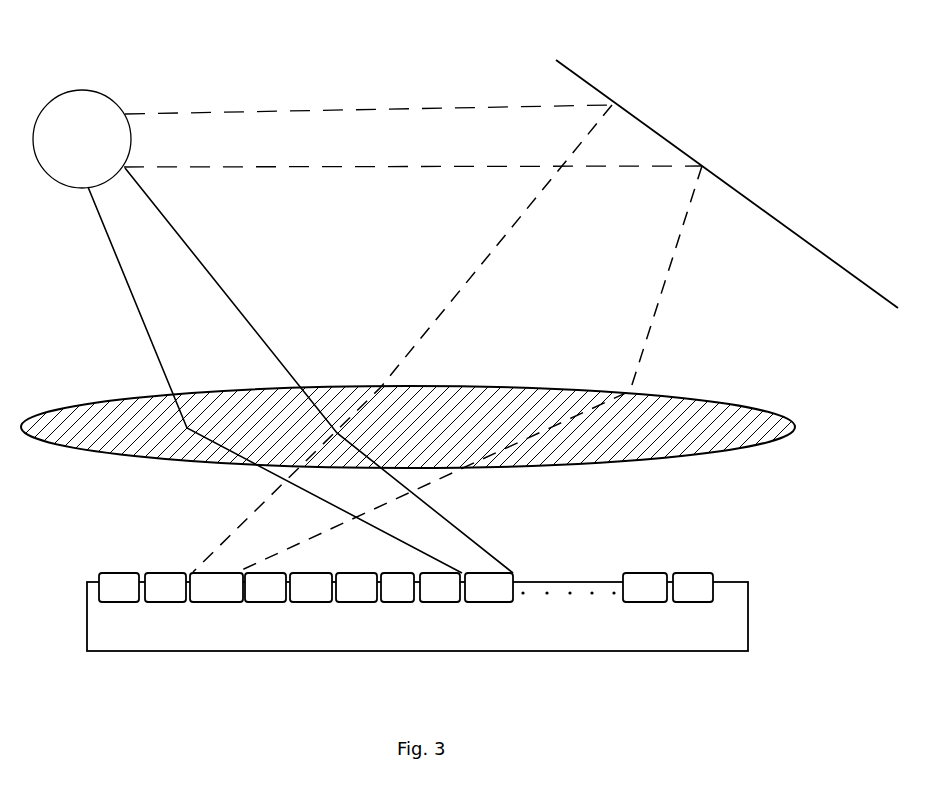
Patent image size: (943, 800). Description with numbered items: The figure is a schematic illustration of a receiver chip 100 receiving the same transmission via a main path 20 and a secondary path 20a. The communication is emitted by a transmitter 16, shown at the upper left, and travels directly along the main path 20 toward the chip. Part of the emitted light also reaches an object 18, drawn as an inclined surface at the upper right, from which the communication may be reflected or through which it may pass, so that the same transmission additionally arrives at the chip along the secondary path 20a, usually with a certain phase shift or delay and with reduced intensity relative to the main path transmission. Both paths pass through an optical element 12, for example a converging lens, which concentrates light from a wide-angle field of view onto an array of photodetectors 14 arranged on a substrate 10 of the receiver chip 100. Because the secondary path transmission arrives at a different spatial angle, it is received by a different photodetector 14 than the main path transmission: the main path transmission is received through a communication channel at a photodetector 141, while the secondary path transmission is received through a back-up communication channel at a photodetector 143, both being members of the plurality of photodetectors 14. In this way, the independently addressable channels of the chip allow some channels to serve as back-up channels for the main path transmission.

The receiver chip 100 is at (430, 71).
The transmitter 16 is at (72, 146).
The object 18 is at (717, 148).
The main path 20 is at (158, 281).
The secondary path 20a is at (608, 263).
The optical element 12 is at (343, 400).
The substrate 10 is at (357, 638).
The photodetectors 14 is at (406, 632).
The photodetector 141 is at (507, 597).
The photodetector 143 is at (236, 597).